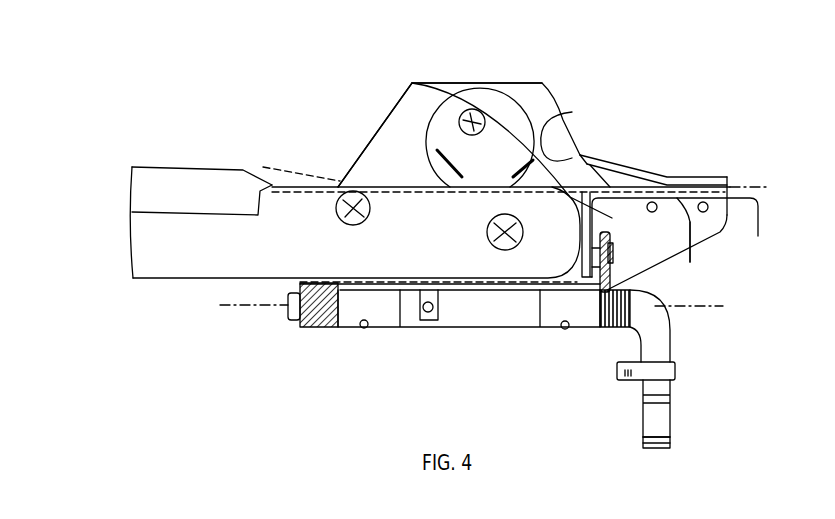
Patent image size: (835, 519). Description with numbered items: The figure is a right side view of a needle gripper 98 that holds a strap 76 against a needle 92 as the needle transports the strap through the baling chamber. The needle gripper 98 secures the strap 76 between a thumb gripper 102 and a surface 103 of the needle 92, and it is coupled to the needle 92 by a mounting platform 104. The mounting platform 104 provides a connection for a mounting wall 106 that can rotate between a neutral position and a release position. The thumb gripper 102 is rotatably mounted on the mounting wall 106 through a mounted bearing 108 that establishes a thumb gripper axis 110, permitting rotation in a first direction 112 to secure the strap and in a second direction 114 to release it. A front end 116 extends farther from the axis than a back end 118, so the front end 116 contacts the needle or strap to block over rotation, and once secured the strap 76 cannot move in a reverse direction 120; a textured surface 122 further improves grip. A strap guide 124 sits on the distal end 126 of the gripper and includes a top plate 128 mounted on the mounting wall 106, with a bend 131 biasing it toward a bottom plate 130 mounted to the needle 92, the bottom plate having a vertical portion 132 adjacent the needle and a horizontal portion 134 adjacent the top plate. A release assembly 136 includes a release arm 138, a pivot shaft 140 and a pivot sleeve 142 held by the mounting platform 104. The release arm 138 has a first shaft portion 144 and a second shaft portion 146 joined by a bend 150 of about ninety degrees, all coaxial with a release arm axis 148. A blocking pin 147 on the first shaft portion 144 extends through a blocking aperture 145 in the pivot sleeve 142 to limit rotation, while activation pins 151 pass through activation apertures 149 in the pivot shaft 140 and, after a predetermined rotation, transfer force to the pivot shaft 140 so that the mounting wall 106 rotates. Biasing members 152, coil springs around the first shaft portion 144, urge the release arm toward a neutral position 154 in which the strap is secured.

The needle gripper 98 is at (744, 78).
The strap 76 is at (297, 170).
The needle 92 is at (312, 249).
The thumb gripper 102 is at (443, 102).
The surface 103 is at (413, 188).
The mounting platform 104 is at (482, 285).
The mounting wall 106 is at (543, 86).
The mounted bearing 108 is at (527, 83).
The thumb gripper axis 110 is at (474, 109).
The first direction 112 is at (540, 176).
The second direction 114 is at (437, 175).
The front end 116 is at (572, 113).
The back end 118 is at (411, 84).
The reverse direction 120 is at (97, 223).
The textured surface 122 is at (582, 151).
The strap guide 124 is at (712, 169).
The distal end 126 is at (722, 245).
The top plate 128 is at (728, 177).
The bottom plate 130 is at (690, 252).
The bend 131 is at (654, 158).
The vertical portion 132 is at (597, 213).
The horizontal portion 134 is at (722, 241).
The release assembly 136 is at (382, 407).
The release arm 138 is at (677, 320).
The pivot shaft 140 is at (345, 327).
The pivot sleeve 142 is at (477, 321).
The first shaft portion 144 is at (288, 308).
The blocking aperture 145 is at (431, 333).
The second shaft portion 146 is at (657, 449).
The blocking pin 147 is at (423, 307).
The release arm axis 148 is at (245, 305).
The activation apertures 149 is at (357, 335).
The bend 150 is at (634, 383).
The activation pins 151 is at (366, 327).
The biasing members 152 is at (302, 327).
The neutral position 154 is at (725, 429).